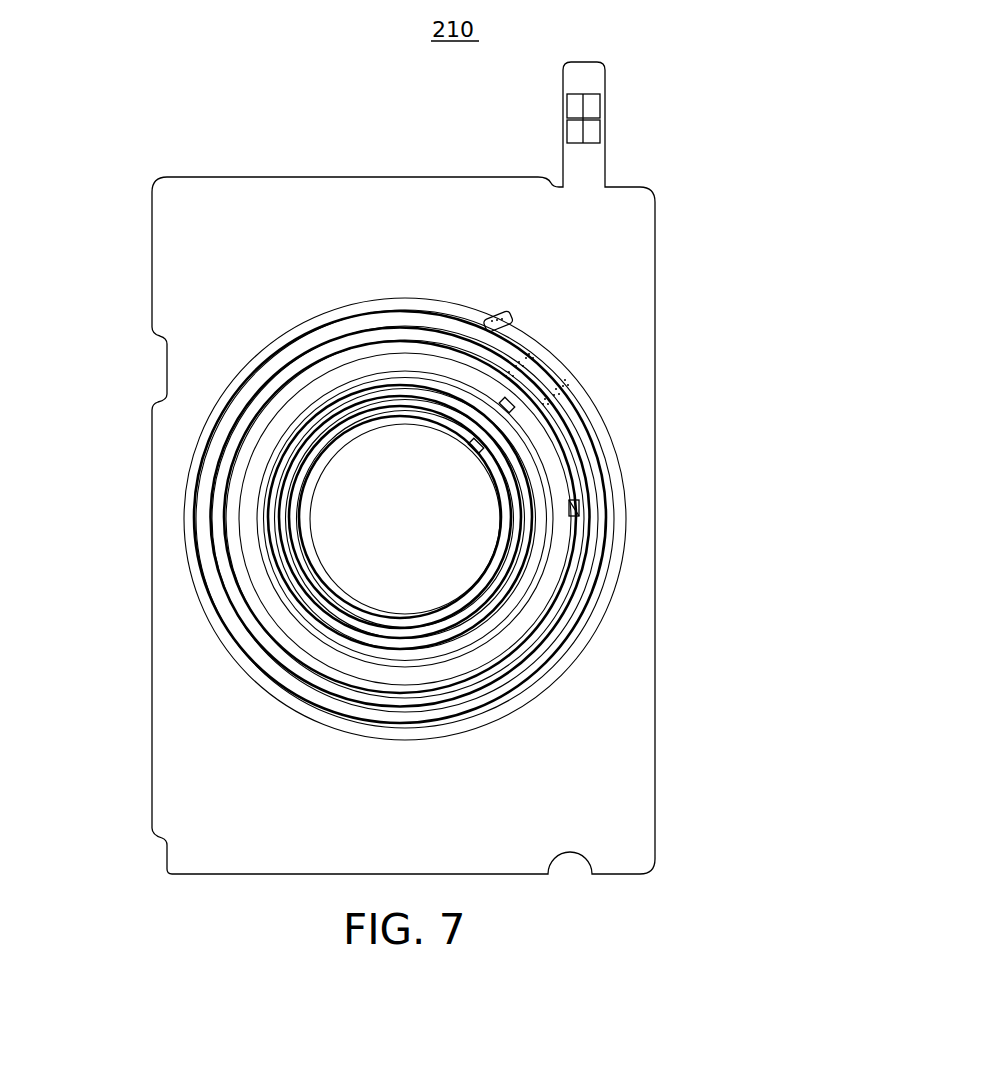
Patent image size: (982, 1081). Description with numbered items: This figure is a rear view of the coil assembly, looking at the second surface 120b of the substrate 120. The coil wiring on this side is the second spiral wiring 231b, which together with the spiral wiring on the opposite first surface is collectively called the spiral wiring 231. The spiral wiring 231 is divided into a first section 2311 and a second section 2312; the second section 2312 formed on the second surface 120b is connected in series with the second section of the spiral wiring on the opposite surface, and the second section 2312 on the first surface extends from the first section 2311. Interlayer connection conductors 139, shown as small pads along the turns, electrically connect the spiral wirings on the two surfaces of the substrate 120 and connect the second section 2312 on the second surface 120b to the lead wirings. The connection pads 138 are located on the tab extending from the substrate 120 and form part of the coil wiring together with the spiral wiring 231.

The substrate 120 is at (346, 468).
The second surface 120b is at (313, 190).
The connection pads 138 is at (573, 133).
The interlayer connection conductors 139 is at (483, 443).
The second spiral wiring 231b is at (509, 519).
The spiral wiring 231 is at (509, 519).
The first section 2311 is at (595, 565).
The second section 2312 is at (540, 590).